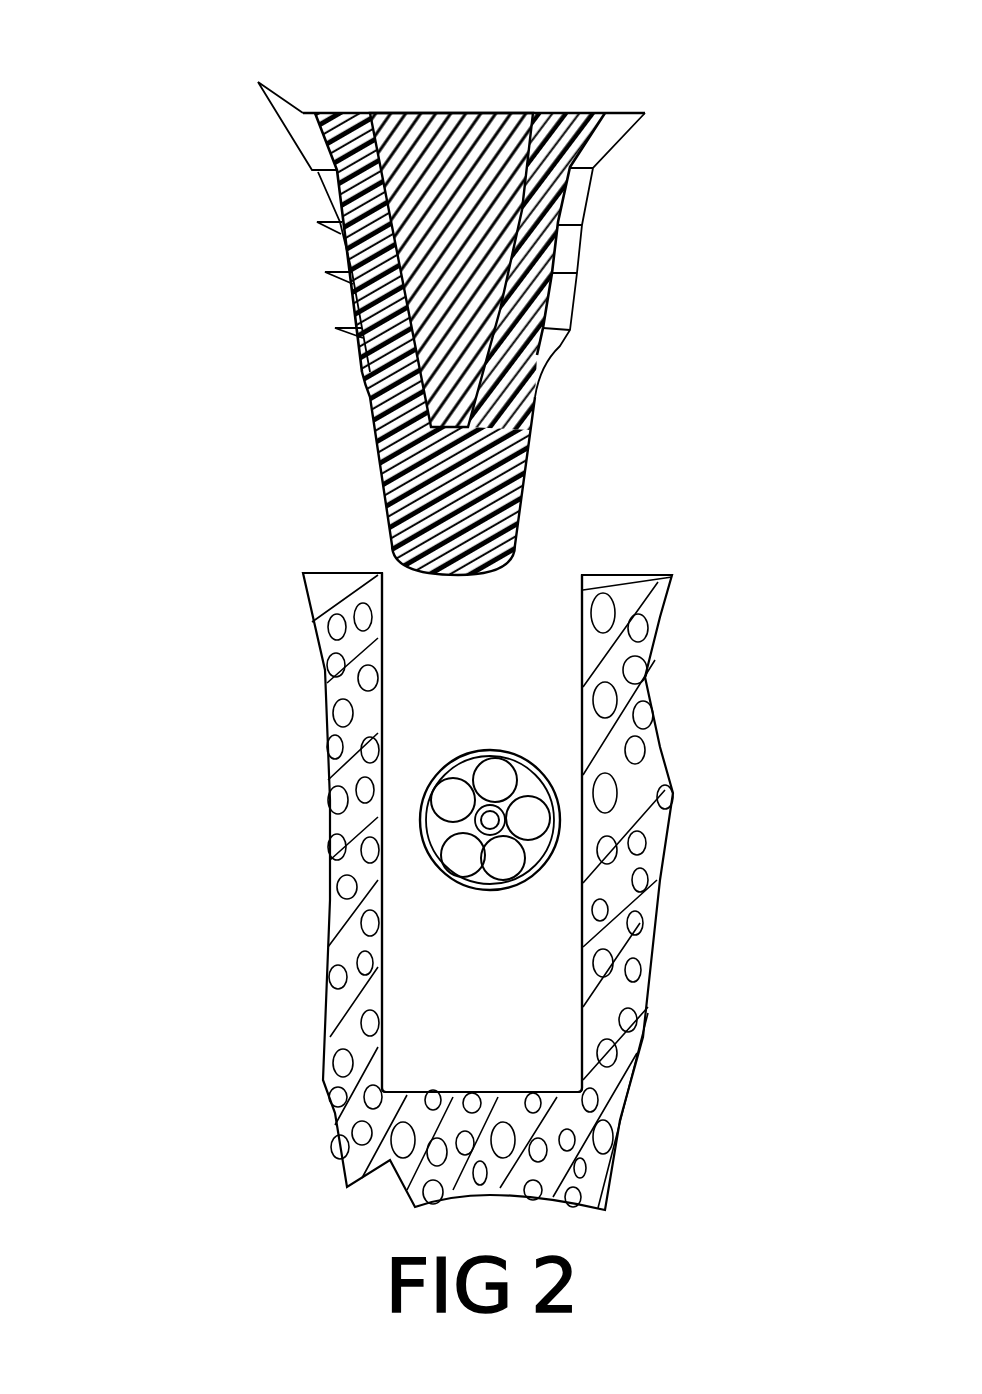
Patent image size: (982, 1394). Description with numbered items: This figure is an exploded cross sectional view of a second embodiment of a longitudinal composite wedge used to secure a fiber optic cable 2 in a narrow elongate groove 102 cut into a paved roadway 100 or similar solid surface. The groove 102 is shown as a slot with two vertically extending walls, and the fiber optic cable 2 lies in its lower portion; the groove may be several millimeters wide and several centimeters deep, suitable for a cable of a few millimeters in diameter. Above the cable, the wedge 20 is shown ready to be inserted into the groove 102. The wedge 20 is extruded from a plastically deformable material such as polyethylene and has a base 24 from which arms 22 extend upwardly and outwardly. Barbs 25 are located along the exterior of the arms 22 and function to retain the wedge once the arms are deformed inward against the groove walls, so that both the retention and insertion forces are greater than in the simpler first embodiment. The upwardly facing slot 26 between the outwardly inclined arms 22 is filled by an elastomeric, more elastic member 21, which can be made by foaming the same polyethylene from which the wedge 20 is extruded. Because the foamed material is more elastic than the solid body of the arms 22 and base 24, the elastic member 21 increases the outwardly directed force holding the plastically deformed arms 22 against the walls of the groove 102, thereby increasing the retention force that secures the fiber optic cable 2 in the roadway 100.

The fiber optic cable 2 is at (495, 752).
The wedge 20 is at (400, 287).
The elastic member 21 is at (452, 163).
The arms 22 is at (345, 240).
The base 24 is at (507, 475).
The barbs 25 is at (627, 324).
The slot 26 is at (530, 112).
The paved roadway 100 is at (633, 800).
The groove 102 is at (503, 1018).